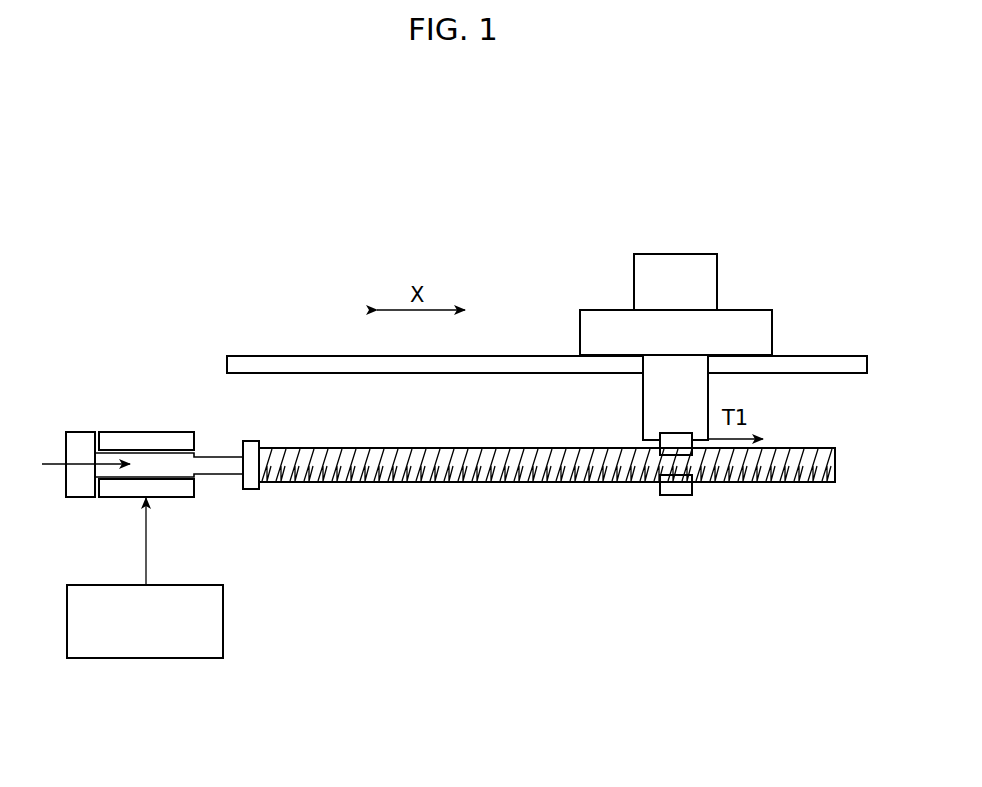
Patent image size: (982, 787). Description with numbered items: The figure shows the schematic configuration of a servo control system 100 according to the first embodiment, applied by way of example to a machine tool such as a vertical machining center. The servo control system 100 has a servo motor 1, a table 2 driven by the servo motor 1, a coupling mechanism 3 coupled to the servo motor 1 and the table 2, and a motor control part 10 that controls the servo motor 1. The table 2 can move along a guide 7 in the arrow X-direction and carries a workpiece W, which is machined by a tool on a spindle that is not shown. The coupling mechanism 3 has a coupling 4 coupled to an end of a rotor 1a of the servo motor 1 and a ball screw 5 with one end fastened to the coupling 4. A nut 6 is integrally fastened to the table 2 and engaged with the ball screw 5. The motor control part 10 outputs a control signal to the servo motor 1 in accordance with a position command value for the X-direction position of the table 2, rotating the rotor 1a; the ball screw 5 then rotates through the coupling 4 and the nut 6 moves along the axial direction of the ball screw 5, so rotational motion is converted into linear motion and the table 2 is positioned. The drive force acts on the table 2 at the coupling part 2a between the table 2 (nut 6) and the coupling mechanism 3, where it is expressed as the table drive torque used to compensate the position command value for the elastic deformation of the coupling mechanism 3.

The servo motor 1 is at (84, 432).
The rotor 1a is at (178, 462).
The table 2 is at (772, 330).
The coupling part 2a is at (670, 442).
The coupling mechanism 3 is at (757, 505).
The coupling 4 is at (250, 490).
The ball screw 5 is at (432, 482).
The nut 6 is at (676, 496).
The guide 7 is at (287, 356).
The motor control part 10 is at (158, 658).
The servo control system 100 is at (793, 212).
The workpiece W is at (692, 263).